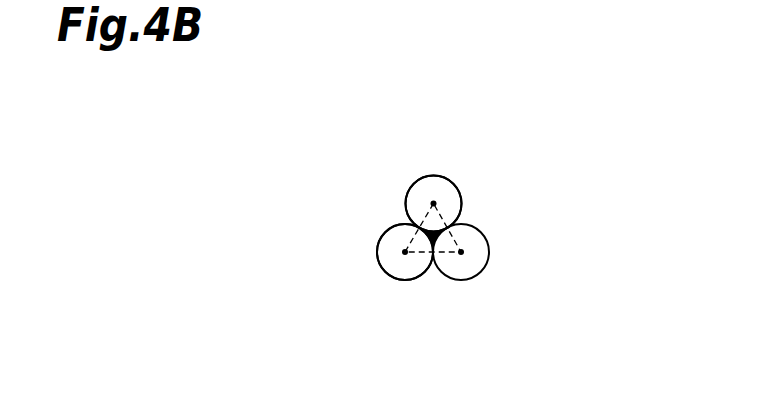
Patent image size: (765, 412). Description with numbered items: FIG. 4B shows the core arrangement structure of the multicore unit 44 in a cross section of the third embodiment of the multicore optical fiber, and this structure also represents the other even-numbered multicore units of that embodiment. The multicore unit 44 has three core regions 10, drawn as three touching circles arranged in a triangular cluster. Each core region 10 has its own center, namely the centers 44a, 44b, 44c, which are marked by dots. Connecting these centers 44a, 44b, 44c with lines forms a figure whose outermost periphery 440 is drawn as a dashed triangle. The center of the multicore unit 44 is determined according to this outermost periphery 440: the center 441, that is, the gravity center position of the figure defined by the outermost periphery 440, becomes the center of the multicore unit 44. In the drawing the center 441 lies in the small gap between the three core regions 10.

The core region 10 is at (420, 193).
The multicore unit 44 is at (486, 247).
The center of core region 44a is at (434, 204).
The center of core region 44b is at (405, 252).
The center of core region 44c is at (461, 252).
The outermost periphery 440 is at (452, 241).
The center 441 is at (433, 247).